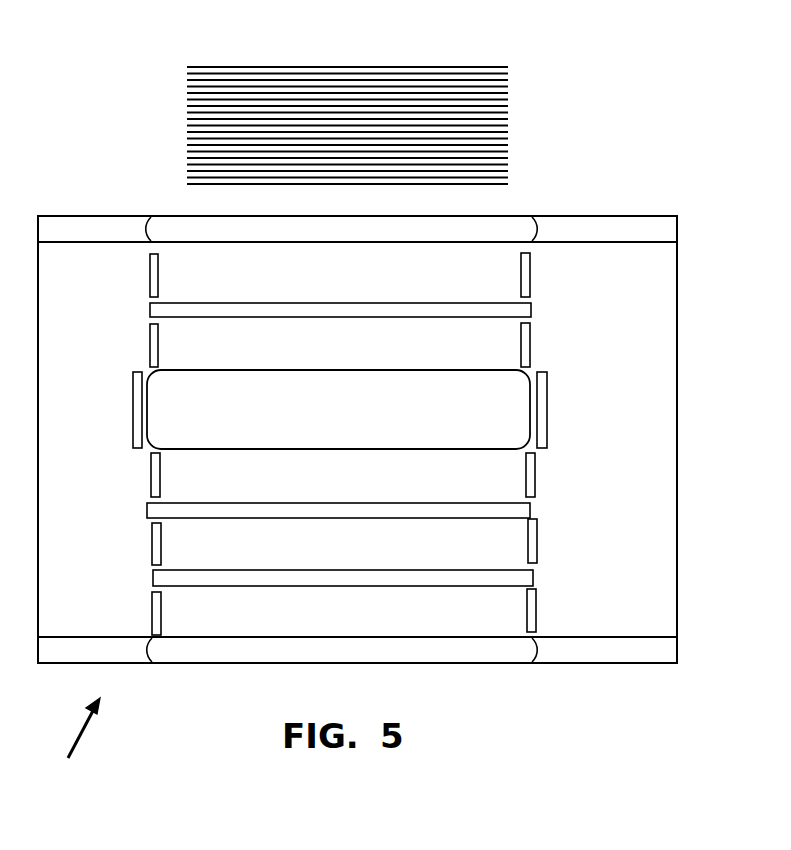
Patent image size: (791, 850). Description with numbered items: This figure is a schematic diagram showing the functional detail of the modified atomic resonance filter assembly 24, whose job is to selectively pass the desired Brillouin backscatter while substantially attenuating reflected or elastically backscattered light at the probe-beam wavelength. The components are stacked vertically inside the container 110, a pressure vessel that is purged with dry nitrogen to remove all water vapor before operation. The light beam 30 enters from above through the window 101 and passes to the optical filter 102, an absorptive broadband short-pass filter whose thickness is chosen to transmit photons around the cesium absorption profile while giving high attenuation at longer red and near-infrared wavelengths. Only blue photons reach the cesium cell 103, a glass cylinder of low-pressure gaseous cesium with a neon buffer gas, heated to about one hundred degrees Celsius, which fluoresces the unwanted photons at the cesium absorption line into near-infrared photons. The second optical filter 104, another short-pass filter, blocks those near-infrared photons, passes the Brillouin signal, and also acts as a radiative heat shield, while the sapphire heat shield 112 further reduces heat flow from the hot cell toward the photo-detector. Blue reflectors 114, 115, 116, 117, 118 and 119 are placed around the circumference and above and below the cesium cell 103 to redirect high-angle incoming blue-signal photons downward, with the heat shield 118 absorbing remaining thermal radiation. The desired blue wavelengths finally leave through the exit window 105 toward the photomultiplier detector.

The light beam 30 is at (469, 70).
The window 101 is at (518, 213).
The optical filter 102 is at (438, 300).
The cesium cell 103 is at (403, 449).
The optical filter 104 is at (263, 502).
The exit window 105 is at (463, 663).
The container 110 is at (677, 561).
The sapphire heat shield 112 is at (263, 568).
The blue reflector 114 is at (150, 270).
The blue reflector 115 is at (150, 330).
The blue reflector 116 is at (132, 426).
The blue reflector 117 is at (151, 468).
The blue reflector 118 is at (151, 547).
The blue reflector 119 is at (151, 616).
The atomic resonance filter assembly 24 is at (72, 745).